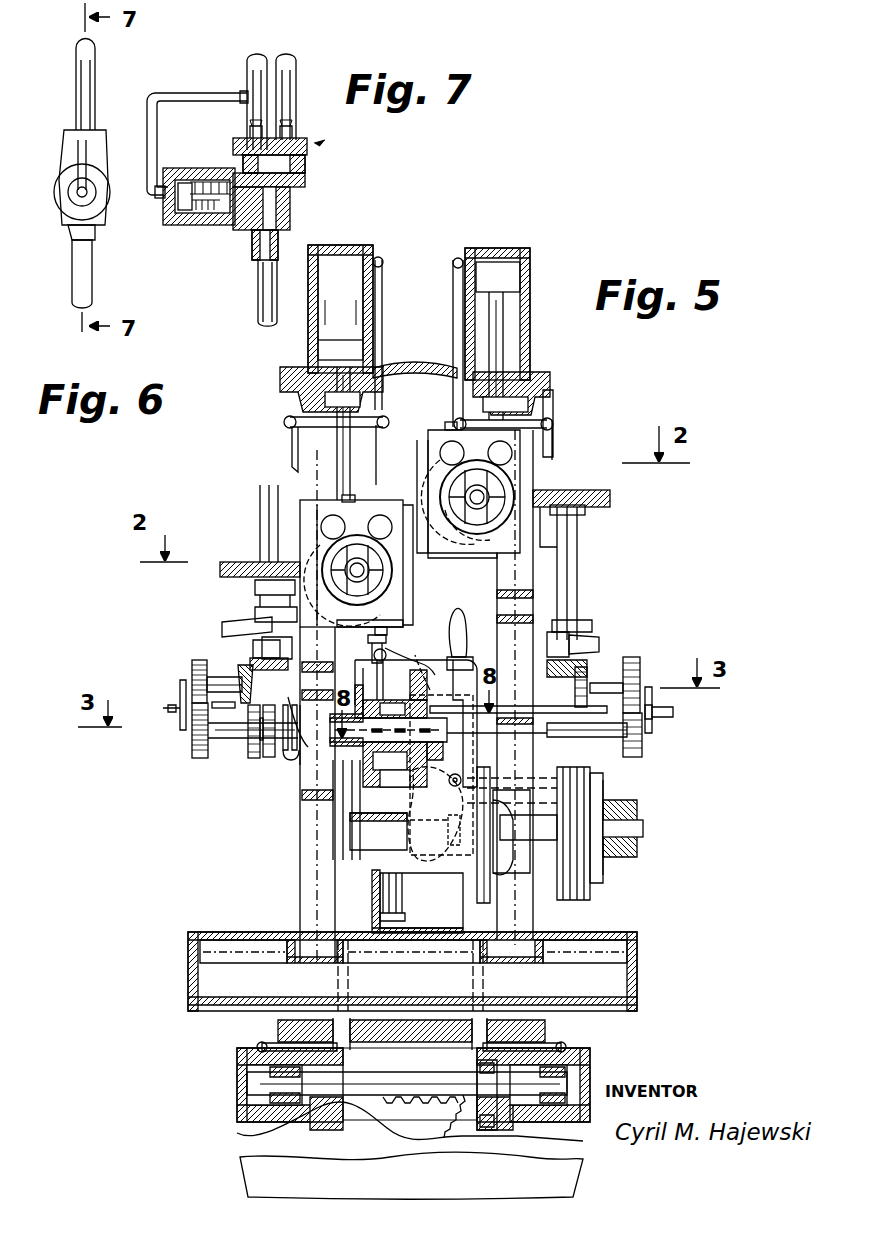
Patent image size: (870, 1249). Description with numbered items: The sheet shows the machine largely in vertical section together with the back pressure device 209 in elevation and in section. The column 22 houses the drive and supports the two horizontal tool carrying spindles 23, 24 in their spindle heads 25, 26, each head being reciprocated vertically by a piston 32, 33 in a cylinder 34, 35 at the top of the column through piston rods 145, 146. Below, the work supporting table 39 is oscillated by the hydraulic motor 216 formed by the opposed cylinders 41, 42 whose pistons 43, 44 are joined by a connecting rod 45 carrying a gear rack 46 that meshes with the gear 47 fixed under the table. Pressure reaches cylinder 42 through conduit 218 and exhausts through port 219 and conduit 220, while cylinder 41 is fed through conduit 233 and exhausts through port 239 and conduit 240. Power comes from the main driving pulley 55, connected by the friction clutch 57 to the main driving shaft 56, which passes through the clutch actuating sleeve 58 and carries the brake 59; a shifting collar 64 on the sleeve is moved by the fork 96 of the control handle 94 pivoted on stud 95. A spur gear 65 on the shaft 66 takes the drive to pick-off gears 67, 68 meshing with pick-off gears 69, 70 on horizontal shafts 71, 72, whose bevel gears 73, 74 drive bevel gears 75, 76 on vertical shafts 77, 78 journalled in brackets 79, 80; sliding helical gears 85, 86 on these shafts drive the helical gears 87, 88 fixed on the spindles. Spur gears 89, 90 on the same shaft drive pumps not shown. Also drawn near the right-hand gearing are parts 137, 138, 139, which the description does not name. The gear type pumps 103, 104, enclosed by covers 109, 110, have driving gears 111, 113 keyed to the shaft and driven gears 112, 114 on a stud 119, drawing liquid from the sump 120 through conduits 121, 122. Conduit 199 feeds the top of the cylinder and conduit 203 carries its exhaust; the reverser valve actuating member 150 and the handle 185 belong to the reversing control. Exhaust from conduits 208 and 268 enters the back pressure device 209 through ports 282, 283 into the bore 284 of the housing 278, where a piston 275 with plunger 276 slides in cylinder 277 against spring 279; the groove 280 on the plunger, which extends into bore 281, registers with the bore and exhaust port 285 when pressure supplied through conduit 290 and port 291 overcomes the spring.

In FIG. 5, the column 22 is at (545, 393).
In FIG. 5, the tool carrying spindle 23 is at (483, 522).
In FIG. 5, the tool carrying spindle 24 is at (351, 540).
In FIG. 5, the spindle head 25 is at (440, 545).
In FIG. 5, the spindle head 26 is at (365, 513).
In FIG. 5, the piston 32 is at (322, 360).
In FIG. 5, the piston 33 is at (530, 268).
In FIG. 5, the cylinder 34 is at (308, 305).
In FIG. 5, the cylinder 35 is at (528, 318).
In FIG. 5, the work supporting table 39 is at (250, 1167).
In FIG. 5, the hydraulic cylinder 41 is at (237, 1092).
In FIG. 5, the hydraulic cylinder 42 is at (560, 1053).
In FIG. 5, the piston 43 is at (285, 1082).
In FIG. 5, the piston 44 is at (565, 1073).
In FIG. 5, the connecting rod 45 is at (365, 1085).
In FIG. 5, the gear rack 46 is at (430, 1100).
In FIG. 5, the gear 47 is at (440, 1105).
In FIG. 5, the main driving pulley 55 is at (580, 795).
In FIG. 5, the main driving shaft 56 is at (640, 830).
In FIG. 5, the friction clutch 57 is at (600, 883).
In FIG. 5, the clutch actuating sleeve 58 is at (553, 848).
In FIG. 5, the brake 59 is at (495, 867).
In FIG. 5, the shifting collar 64 is at (450, 860).
In FIG. 5, the spur gear 65 is at (440, 671).
In FIG. 5, the shaft 66 is at (225, 735).
In FIG. 5, the pick-off gear 67 is at (192, 747).
In FIG. 5, the pick-off gear 68 is at (642, 747).
In FIG. 5, the pick-off gear 69 is at (193, 670).
In FIG. 5, the pick-off gear 70 is at (640, 663).
In FIG. 5, the horizontal shaft 71 is at (217, 678).
In FIG. 5, the horizontal shaft 72 is at (608, 683).
In FIG. 5, the bevel gear 73 is at (238, 673).
In FIG. 5, the bevel gear 74 is at (582, 672).
In FIG. 5, the bevel gear 75 is at (266, 670).
In FIG. 5, the bevel gear 76 is at (580, 677).
In FIG. 5, the vertical shaft 77 is at (260, 512).
In FIG. 5, the vertical shaft 78 is at (577, 558).
In FIG. 5, the bracket 79 is at (242, 635).
In FIG. 5, the bracket 80 is at (583, 637).
In FIG. 5, the helical gear 85 is at (228, 568).
In FIG. 5, the helical gear 86 is at (610, 499).
In FIG. 5, the helical gear 87 is at (480, 584).
In FIG. 5, the helical gear 88 is at (445, 435).
In FIG. 5, the spur gear 89 is at (250, 745).
In FIG. 5, the spur gear 90 is at (270, 743).
In FIG. 5, the control handle 94 is at (460, 630).
In FIG. 5, the stud 95 is at (430, 812).
In FIG. 5, the fork 96 is at (448, 825).
In FIG. 5, the gear type pump 103 is at (390, 660).
In FIG. 5, the gear type pump 104 is at (370, 670).
In FIG. 5, the cover 109 is at (455, 782).
In FIG. 5, the cover 110 is at (355, 750).
In FIG. 5, the driving gear 111 is at (408, 695).
In FIG. 5, the driven gear 112 is at (382, 831).
In FIG. 5, the driving gear 113 is at (382, 702).
In FIG. 5, the driven gear 114 is at (360, 798).
In FIG. 5, the stud 119 is at (427, 758).
In FIG. 5, the sump 120 is at (428, 923).
In FIG. 5, the conduit 121 is at (380, 870).
In FIG. 5, the conduit 122 is at (435, 872).
In FIG. 5, the shaft 137 is at (592, 725).
In FIG. 5, the lever 138 is at (658, 698).
In FIG. 5, the knob 139 is at (672, 715).
In FIG. 5, the piston rod 145 is at (340, 433).
In FIG. 5, the piston rod 146 is at (505, 324).
In FIG. 5, the reverser valve actuating member 150 is at (395, 626).
In FIG. 5, the handle 185 is at (387, 652).
In FIG. 5, the conduit 199 is at (452, 328).
In FIG. 5, the conduit 203 is at (555, 420).
In FIG. 7, the conduit 208 is at (247, 65).
In FIG. 6, the back pressure device 209 is at (56, 218).
In FIG. 7, the back pressure device 209 is at (320, 140).
In FIG. 5, the hydraulic motor 216 is at (188, 1050).
In FIG. 5, the conduit 218 is at (488, 785).
In FIG. 5, the port 219 is at (525, 1113).
In FIG. 5, the conduit 220 is at (468, 807).
In FIG. 5, the conduit 233 is at (284, 765).
In FIG. 5, the port 239 is at (258, 1042).
In FIG. 5, the conduit 240 is at (306, 680).
In FIG. 7, the conduit 268 is at (290, 78).
In FIG. 7, the piston 275 is at (183, 220).
In FIG. 7, the plunger 276 is at (212, 215).
In FIG. 7, the cylinder 277 is at (212, 170).
In FIG. 6, the housing 278 is at (68, 146).
In FIG. 7, the housing 278 is at (298, 185).
In FIG. 7, the spring 279 is at (220, 177).
In FIG. 7, the groove 280 is at (258, 230).
In FIG. 7, the bore 281 is at (288, 198).
In FIG. 7, the port 282 is at (264, 138).
In FIG. 7, the port 283 is at (303, 155).
In FIG. 7, the bore 284 is at (297, 174).
In FIG. 7, the exhaust port 285 is at (283, 223).
In FIG. 7, the conduit 290 is at (197, 92).
In FIG. 7, the port 291 is at (160, 207).